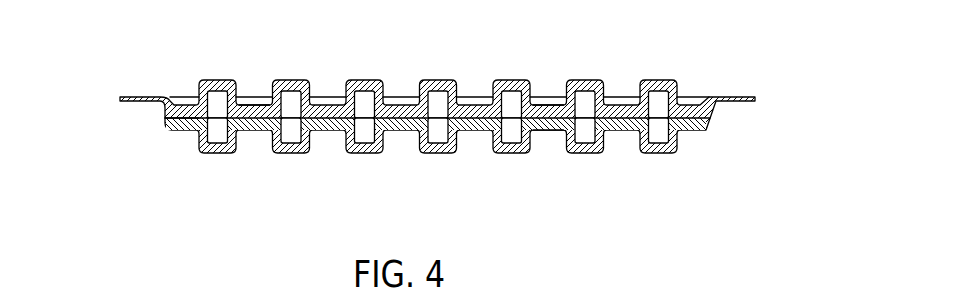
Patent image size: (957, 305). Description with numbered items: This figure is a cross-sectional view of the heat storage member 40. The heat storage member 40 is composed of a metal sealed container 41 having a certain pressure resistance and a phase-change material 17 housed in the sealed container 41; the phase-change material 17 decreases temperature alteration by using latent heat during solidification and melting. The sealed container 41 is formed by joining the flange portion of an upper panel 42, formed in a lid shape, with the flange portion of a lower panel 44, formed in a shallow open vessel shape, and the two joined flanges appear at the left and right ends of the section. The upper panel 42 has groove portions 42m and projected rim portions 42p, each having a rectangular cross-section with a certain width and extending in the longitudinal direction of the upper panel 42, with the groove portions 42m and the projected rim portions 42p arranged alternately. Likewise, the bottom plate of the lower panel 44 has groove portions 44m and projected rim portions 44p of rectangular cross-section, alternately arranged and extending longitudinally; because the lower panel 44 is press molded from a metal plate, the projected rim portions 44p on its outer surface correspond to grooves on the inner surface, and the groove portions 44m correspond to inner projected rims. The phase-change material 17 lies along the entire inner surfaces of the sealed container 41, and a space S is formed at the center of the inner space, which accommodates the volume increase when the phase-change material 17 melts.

The phase-change material 17 is at (250, 106).
The heat storage member 40 is at (698, 83).
The sealed container 41 is at (78, 58).
The upper panel 42 is at (165, 98).
The lower panel 44 is at (160, 116).
The projected rim portion 42p is at (512, 80).
The groove portion 42m is at (546, 106).
The projected rim portion 44p is at (508, 154).
The groove portion 44m is at (549, 131).
The space S is at (366, 136).